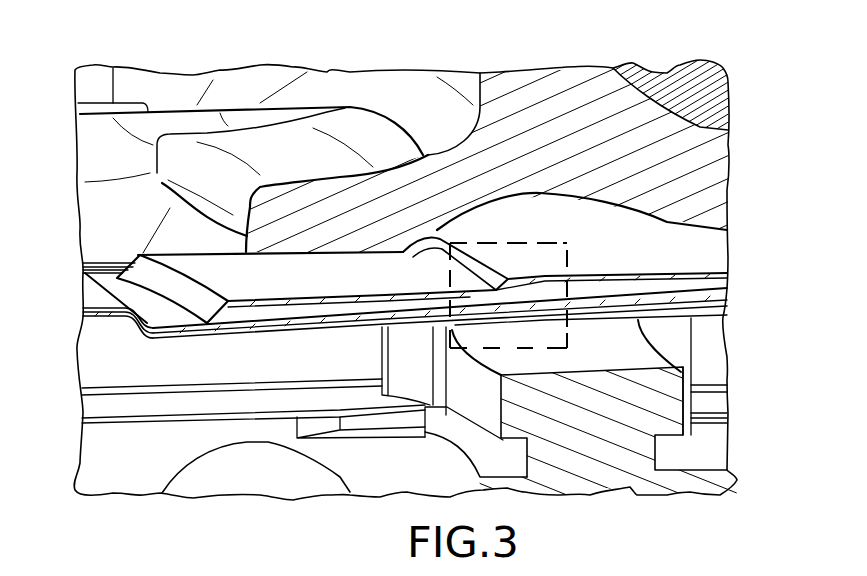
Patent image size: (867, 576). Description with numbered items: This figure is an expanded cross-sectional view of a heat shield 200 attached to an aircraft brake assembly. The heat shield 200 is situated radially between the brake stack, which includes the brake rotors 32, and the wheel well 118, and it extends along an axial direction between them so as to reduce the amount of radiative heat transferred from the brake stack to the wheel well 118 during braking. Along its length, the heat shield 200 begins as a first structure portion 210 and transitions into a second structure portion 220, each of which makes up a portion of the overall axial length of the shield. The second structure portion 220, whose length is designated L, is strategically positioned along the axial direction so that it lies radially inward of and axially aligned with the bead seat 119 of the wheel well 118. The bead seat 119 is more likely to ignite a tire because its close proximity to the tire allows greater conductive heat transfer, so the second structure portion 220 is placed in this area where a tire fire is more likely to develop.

The wheel well 118 is at (437, 187).
The bead seat 119 is at (700, 127).
The second structure portion 220 is at (613, 247).
The heat shield 200 is at (683, 272).
The first structure portion 210 is at (245, 282).
The brake rotors 32 is at (607, 470).